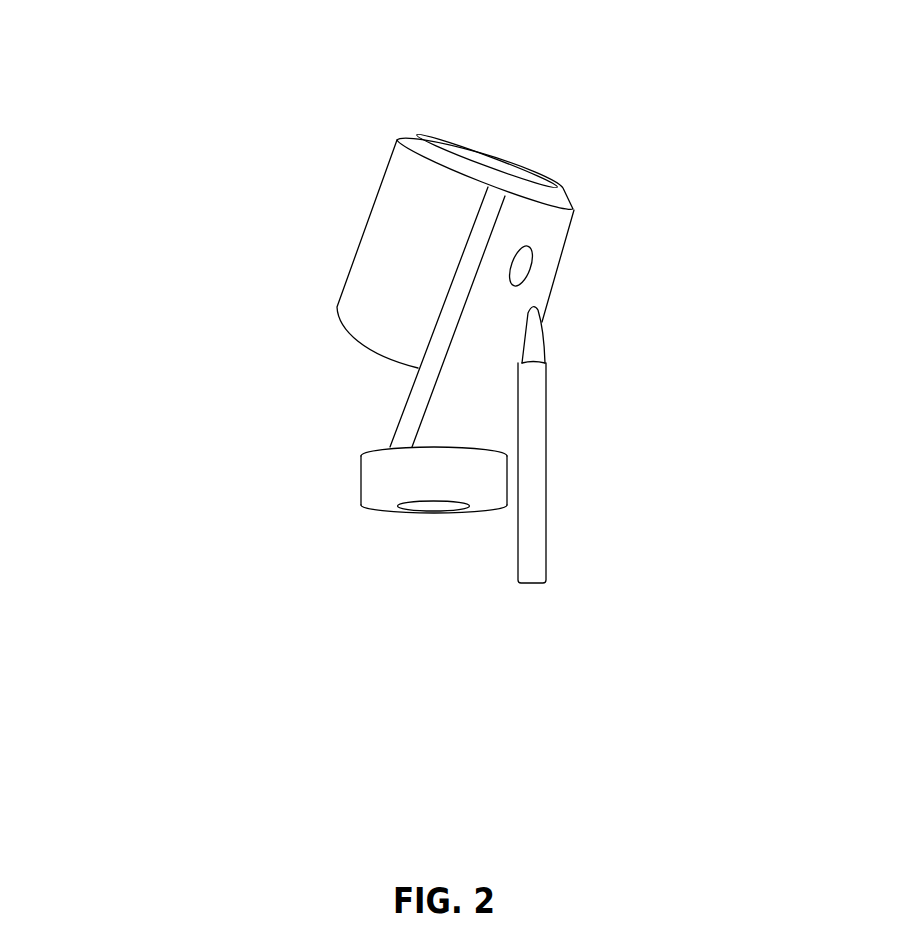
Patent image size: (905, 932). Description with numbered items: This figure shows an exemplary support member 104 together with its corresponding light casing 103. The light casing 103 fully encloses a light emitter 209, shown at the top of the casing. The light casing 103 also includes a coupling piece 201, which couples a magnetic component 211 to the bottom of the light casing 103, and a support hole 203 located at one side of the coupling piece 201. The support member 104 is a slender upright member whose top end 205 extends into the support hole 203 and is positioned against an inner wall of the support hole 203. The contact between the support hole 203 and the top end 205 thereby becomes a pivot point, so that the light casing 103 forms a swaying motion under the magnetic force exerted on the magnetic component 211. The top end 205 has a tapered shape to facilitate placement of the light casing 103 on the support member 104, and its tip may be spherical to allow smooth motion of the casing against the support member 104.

The light casing 103 is at (387, 200).
The light emitter 209 is at (477, 153).
The coupling piece 201 is at (478, 355).
The support hole 203 is at (523, 262).
The top end 205 is at (535, 347).
The support member 104 is at (533, 428).
The magnetic component 211 is at (425, 468).